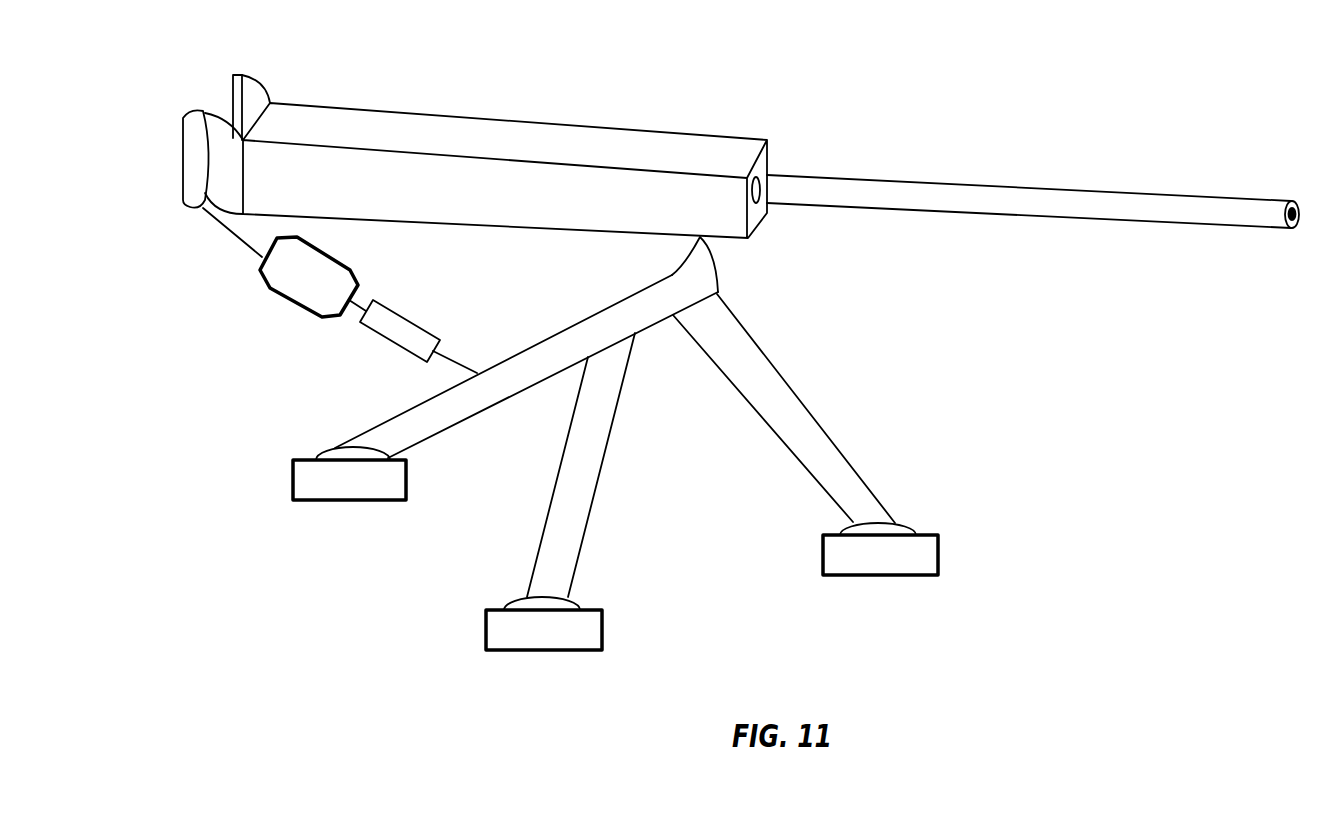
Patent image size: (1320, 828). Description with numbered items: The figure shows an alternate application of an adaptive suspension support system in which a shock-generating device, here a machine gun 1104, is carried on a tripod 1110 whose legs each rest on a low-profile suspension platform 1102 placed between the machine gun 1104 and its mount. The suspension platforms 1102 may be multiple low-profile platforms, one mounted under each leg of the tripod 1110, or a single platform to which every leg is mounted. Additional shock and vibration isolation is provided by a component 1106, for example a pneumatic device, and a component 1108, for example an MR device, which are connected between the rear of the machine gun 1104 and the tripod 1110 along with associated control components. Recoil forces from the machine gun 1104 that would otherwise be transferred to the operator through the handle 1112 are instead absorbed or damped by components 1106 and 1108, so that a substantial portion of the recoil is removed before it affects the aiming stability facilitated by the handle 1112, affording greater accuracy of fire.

The low-profile suspension platform 1102 is at (308, 488).
The machine gun 1104 is at (747, 152).
The pneumatic device component 1106 is at (298, 295).
The MR device component 1108 is at (388, 332).
The tripod 1110 is at (718, 290).
The handle 1112 is at (187, 145).